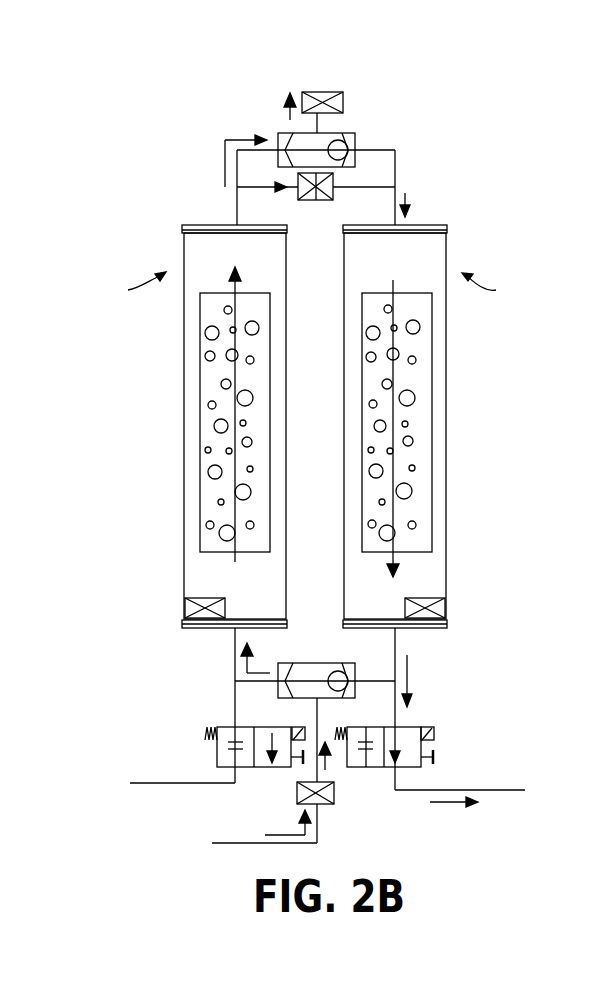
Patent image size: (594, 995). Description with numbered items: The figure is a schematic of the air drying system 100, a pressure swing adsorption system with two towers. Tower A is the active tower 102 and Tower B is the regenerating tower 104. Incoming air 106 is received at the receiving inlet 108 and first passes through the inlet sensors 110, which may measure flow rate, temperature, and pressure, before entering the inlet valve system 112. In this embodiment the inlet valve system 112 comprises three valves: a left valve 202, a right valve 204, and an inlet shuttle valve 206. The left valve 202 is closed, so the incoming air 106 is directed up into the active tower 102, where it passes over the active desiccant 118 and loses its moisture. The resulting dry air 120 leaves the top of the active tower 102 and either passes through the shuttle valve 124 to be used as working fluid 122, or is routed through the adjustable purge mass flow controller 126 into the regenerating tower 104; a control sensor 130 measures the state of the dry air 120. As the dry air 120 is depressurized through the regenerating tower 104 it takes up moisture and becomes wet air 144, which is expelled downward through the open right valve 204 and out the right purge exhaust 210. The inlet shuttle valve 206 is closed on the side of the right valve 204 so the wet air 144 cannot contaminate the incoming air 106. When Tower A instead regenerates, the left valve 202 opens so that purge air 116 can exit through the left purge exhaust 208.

The air drying system 100 is at (185, 110).
The active tower 102 is at (193, 356).
The regenerating tower 104 is at (442, 356).
The incoming air 106 is at (267, 835).
The receiving inlet 108 is at (228, 845).
The inlet sensors 110 is at (335, 797).
The inlet valve system 112 is at (172, 692).
The exhaust purge air 116 is at (440, 803).
The active desiccant 118 is at (217, 538).
The dry air 120 is at (223, 167).
The working fluid 122 is at (290, 120).
The shuttle valve 124 is at (372, 135).
The adjustable purge mass flow controller 126 is at (333, 195).
The control sensor 130 is at (343, 107).
The wet air 144 is at (410, 667).
The left valve 202 is at (205, 731).
The right valve 204 is at (434, 733).
The inlet shuttle valve 206 is at (293, 663).
The left purge exhaust 208 is at (190, 784).
The right purge exhaust 210 is at (460, 790).